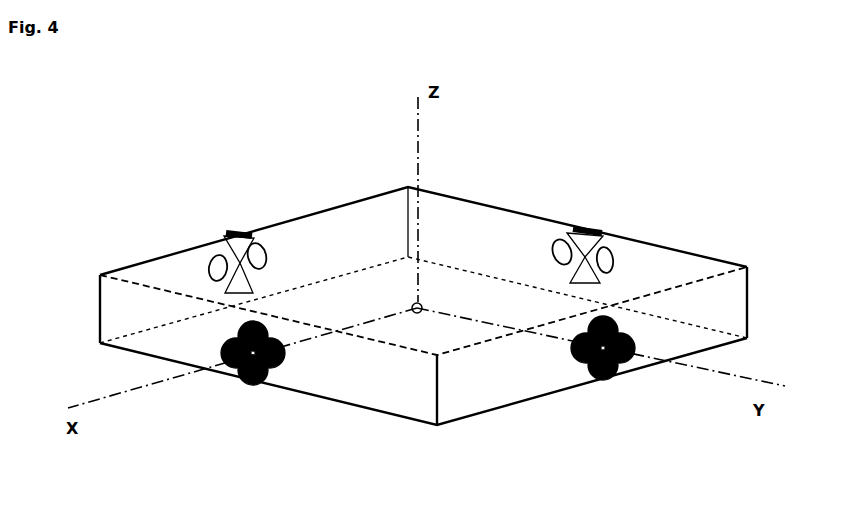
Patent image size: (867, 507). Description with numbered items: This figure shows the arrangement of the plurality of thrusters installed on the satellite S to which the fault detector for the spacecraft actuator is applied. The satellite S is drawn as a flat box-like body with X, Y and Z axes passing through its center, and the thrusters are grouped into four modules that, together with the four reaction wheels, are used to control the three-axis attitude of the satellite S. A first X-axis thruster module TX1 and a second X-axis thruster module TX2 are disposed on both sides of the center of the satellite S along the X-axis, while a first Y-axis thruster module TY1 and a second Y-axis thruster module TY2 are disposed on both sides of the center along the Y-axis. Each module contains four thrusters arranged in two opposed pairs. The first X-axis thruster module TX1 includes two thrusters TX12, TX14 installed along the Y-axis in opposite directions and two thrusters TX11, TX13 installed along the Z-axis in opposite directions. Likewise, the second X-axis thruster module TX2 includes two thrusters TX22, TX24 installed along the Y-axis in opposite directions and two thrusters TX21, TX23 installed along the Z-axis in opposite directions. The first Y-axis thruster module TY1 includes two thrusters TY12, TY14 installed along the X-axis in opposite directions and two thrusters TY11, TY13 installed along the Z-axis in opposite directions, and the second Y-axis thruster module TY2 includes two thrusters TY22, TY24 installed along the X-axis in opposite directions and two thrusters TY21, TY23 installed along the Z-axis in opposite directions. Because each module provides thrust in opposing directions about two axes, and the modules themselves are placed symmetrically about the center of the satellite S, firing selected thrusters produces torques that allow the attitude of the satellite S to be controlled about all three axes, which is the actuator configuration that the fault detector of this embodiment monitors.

The satellite S is at (649, 245).
The first X-axis thruster module TX1 is at (209, 386).
The thruster TX11 is at (248, 318).
The thruster TX12 is at (226, 350).
The thruster TX13 is at (256, 385).
The thruster TX14 is at (280, 362).
The second X-axis thruster module TX2 is at (627, 199).
The thruster TX21 is at (584, 228).
The thruster TX22 is at (608, 262).
The thruster TX23 is at (583, 284).
The thruster TX24 is at (553, 250).
The first Y-axis thruster module TY1 is at (670, 392).
The thruster TY11 is at (605, 316).
The thruster TY12 is at (580, 357).
The thruster TY13 is at (605, 380).
The thruster TY14 is at (635, 343).
The second Y-axis thruster module TY2 is at (199, 221).
The thruster TY21 is at (239, 232).
The thruster TY22 is at (266, 256).
The thruster TY23 is at (248, 294).
The thruster TY24 is at (209, 268).